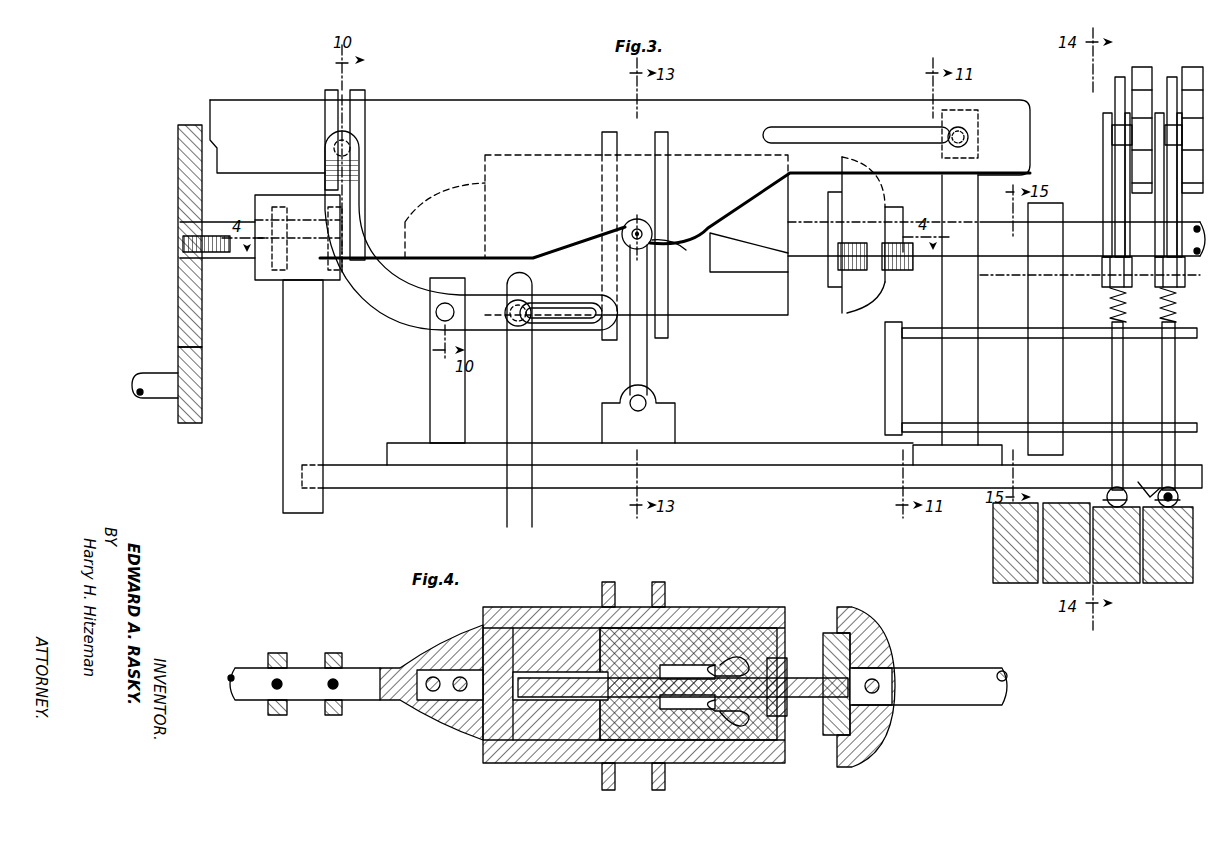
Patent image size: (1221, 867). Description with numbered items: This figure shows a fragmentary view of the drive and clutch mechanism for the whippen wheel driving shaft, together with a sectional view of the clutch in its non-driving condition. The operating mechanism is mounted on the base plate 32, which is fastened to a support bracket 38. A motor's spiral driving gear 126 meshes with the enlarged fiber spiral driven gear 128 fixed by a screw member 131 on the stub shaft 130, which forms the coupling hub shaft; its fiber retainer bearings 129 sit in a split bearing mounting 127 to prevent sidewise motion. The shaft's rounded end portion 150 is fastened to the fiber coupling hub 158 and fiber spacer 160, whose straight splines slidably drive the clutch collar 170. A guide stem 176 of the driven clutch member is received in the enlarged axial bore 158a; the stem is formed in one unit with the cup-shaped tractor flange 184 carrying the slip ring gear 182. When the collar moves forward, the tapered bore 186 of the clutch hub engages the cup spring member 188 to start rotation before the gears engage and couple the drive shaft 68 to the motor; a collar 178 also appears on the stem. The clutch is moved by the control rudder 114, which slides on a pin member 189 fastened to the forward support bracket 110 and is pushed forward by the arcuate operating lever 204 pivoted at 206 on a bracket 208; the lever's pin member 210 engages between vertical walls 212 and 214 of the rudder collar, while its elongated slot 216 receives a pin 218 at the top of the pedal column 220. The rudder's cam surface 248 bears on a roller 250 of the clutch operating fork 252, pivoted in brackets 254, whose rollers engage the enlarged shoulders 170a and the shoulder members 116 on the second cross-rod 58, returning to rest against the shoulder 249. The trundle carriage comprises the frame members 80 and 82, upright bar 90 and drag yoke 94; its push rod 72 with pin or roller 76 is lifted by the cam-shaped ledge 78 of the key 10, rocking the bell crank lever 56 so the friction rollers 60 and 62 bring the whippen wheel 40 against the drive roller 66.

In FIG. 3, the key 10 is at (1125, 590).
In FIG. 3, the base plate 32 is at (400, 488).
In FIG. 3, the support bracket 38 is at (283, 405).
In FIG. 3, the whippen wheel 40 is at (1190, 67).
In FIG. 3, the bell crank lever 56 is at (1180, 240).
In FIG. 3, the second cross-rod 58 is at (1000, 262).
In FIG. 3, the friction roller 60 is at (1112, 118).
In FIG. 3, the friction roller 62 is at (1115, 98).
In FIG. 3, the drive roller 66 is at (1177, 210).
In FIG. 3, the drive shaft 68 is at (1078, 225).
In FIG. 4, the drive shaft 68 is at (955, 703).
In FIG. 3, the push rod 72 is at (1175, 390).
In FIG. 3, the pin or roller 76 is at (1178, 490).
In FIG. 3, the cam-shaped ledge 78 is at (1145, 484).
In FIG. 3, the frame member 80 is at (1093, 432).
In FIG. 3, the frame member 82 is at (1093, 338).
In FIG. 3, the upright bar 90 is at (885, 383).
In FIG. 3, the drag yoke 94 is at (1028, 383).
In FIG. 3, the forward support bracket 110 is at (942, 297).
In FIG. 3, the control rudder 114 is at (852, 107).
In FIG. 3, the shoulder member 116 is at (733, 272).
In FIG. 3, the spiral driving gear 126 is at (172, 412).
In FIG. 3, the split bearing mounting 127 is at (268, 282).
In FIG. 3, the spiral driven gear 128 is at (178, 172).
In FIG. 4, the fiber retainer bearings 129 is at (338, 715).
In FIG. 3, the stub shaft 130 is at (250, 262).
In FIG. 4, the stub shaft 130 is at (362, 700).
In FIG. 3, the screw member 131 is at (220, 252).
In FIG. 4, the rounded end portion 150 is at (440, 730).
In FIG. 4, the fiber coupling hub 158 is at (485, 636).
In FIG. 4, the enlarged axial bore 158a is at (548, 672).
In FIG. 4, the fiber spacer 160 is at (585, 745).
In FIG. 3, the clutch collar 170 is at (732, 315).
In FIG. 4, the clutch collar 170 is at (565, 607).
In FIG. 3, the enlarged shoulders 170a is at (660, 340).
In FIG. 4, the enlarged shoulders 170a is at (660, 582).
In FIG. 4, the guide stem 176 is at (530, 745).
In FIG. 4, the collar 178 is at (790, 705).
In FIG. 4, the slip ring gear 182 is at (826, 736).
In FIG. 3, the tractor flange 184 is at (846, 317).
In FIG. 4, the tractor flange 184 is at (885, 632).
In FIG. 4, the tapered bore 186 is at (730, 660).
In FIG. 4, the cup spring member 188 is at (735, 725).
In FIG. 3, the pin member 189 is at (968, 130).
In FIG. 3, the operating lever 204 is at (378, 303).
In FIG. 3, the pivot 206 is at (440, 318).
In FIG. 3, the bracket 208 is at (430, 418).
In FIG. 3, the pin member 210 is at (352, 148).
In FIG. 3, the vertical wall 212 is at (318, 90).
In FIG. 3, the vertical wall 214 is at (368, 92).
In FIG. 3, the elongated slot 216 is at (556, 323).
In FIG. 3, the pin 218 is at (518, 326).
In FIG. 3, the pedal column 220 is at (532, 412).
In FIG. 3, the cam surface 248 is at (548, 252).
In FIG. 3, the shoulder 249 is at (676, 256).
In FIG. 3, the roller 250 is at (648, 222).
In FIG. 3, the clutch operating fork 252 is at (647, 378).
In FIG. 3, the bracket 254 is at (675, 428).